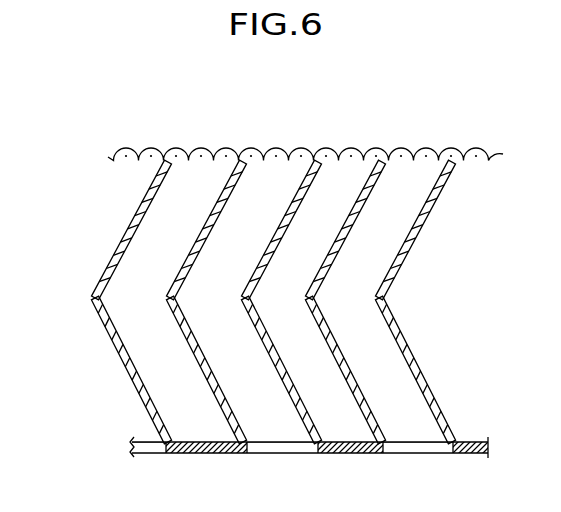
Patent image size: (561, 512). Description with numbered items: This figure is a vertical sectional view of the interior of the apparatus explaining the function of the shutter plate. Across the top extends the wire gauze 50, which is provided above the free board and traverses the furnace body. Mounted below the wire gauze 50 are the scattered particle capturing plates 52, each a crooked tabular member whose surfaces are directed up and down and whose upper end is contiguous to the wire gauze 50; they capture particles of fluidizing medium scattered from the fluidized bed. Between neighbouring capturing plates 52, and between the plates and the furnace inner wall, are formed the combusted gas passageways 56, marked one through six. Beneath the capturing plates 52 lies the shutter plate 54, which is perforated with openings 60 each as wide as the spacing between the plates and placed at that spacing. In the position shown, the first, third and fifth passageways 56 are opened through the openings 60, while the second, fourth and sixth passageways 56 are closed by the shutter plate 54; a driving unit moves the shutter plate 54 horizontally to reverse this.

The wire gauze 50 is at (441, 150).
The scattered particle capturing plate 52 is at (274, 230).
The shutter plate 54 is at (472, 454).
The combusted gas passageway 56 is at (60, 316).
The opening 60 is at (150, 455).